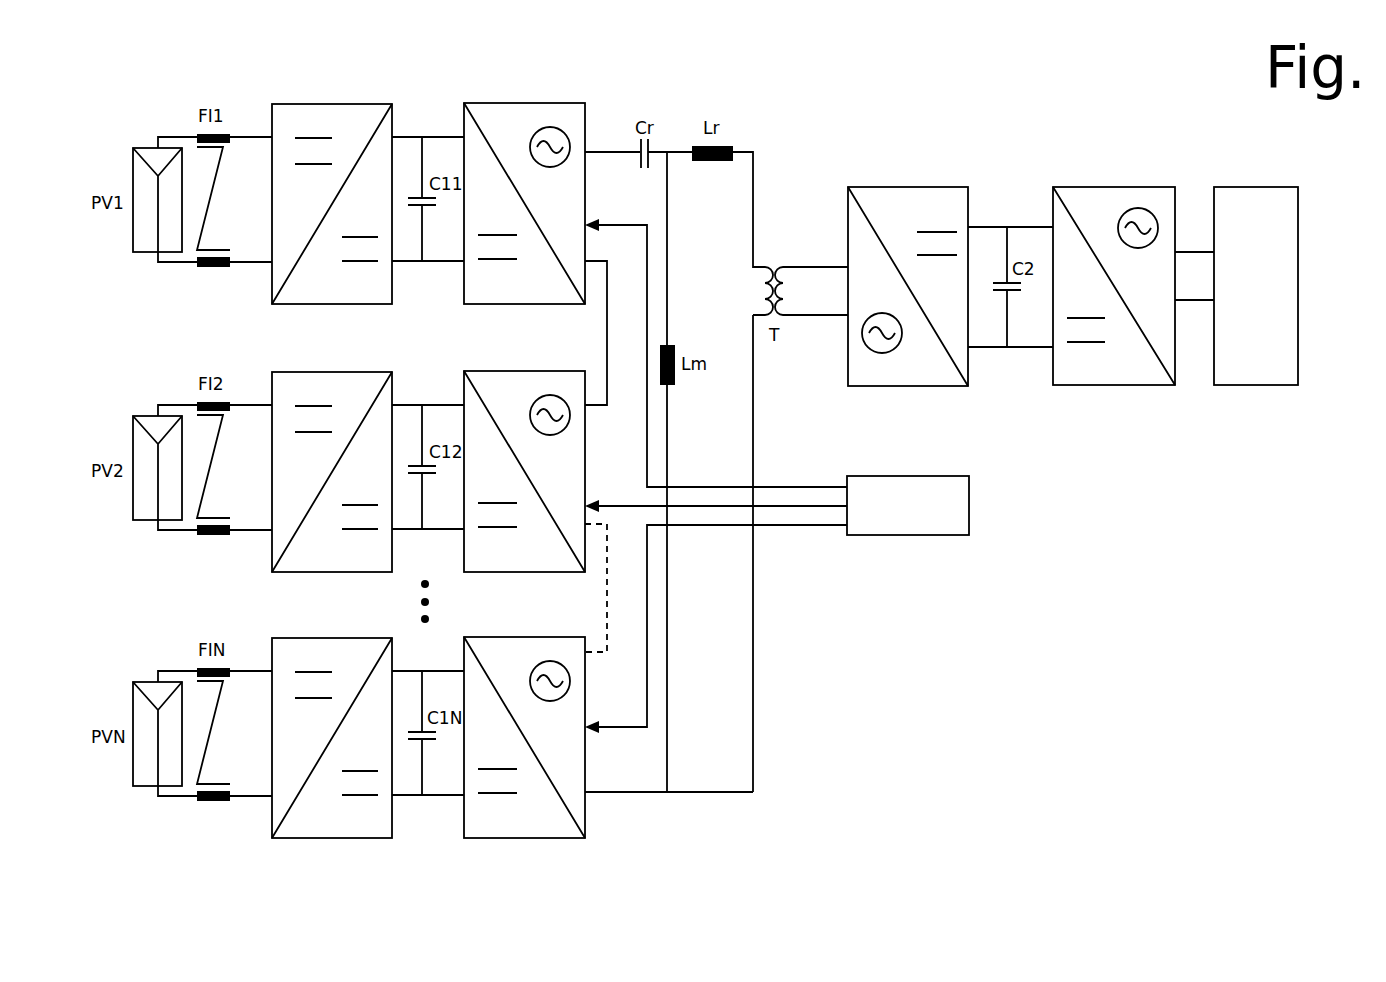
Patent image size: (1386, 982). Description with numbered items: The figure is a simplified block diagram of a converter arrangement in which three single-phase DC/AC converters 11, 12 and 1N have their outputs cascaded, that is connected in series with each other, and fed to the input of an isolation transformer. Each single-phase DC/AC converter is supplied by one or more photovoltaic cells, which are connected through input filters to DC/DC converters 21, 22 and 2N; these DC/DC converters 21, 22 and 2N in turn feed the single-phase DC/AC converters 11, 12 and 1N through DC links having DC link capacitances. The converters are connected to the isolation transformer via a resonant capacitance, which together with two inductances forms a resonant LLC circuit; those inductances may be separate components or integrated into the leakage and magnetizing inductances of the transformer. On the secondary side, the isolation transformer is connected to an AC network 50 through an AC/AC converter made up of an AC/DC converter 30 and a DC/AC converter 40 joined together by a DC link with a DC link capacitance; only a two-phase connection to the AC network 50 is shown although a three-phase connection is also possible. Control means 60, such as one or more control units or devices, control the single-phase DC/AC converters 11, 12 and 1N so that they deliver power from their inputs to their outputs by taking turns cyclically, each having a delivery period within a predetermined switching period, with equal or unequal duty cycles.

The DC/DC converter 21 is at (332, 104).
The DC/DC converter 22 is at (332, 454).
The DC/DC converter 2N is at (332, 720).
The single-phase DC/AC converter 11 is at (525, 103).
The single-phase DC/AC converter 12 is at (524, 454).
The single-phase DC/AC converter 1N is at (524, 720).
The AC/DC converter 30 is at (908, 187).
The DC/AC converter 40 is at (1115, 187).
The AC network 50 is at (1258, 187).
The control means 60 is at (969, 503).